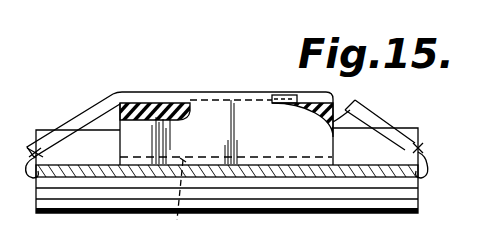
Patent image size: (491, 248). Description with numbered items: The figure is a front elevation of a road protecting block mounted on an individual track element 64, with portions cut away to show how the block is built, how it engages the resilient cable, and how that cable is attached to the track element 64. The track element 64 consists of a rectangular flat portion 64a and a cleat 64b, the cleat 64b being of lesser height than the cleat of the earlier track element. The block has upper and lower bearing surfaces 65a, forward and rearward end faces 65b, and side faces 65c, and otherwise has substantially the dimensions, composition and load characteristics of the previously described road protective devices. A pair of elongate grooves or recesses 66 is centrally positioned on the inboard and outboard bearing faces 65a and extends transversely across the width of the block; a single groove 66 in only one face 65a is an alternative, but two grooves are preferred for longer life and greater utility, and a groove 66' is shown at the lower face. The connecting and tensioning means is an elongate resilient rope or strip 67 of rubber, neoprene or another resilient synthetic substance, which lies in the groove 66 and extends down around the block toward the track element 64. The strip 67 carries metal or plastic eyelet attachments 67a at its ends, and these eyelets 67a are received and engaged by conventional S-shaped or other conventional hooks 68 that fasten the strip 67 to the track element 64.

The track element 64 is at (418, 131).
The rectangular flat portion 64a is at (133, 170).
The cleat 64b is at (36, 130).
The upper and lower bearing surfaces 65a is at (210, 92).
The forward and rearward end faces 65b is at (334, 150).
The side faces 65c is at (350, 110).
The elongate groove or recess 66 is at (159, 92).
The seal edge 66' is at (168, 201).
The elongate resilient rope or strip 67 is at (88, 118).
The eyelet attachments 67a is at (422, 142).
The hooks 68 is at (430, 180).